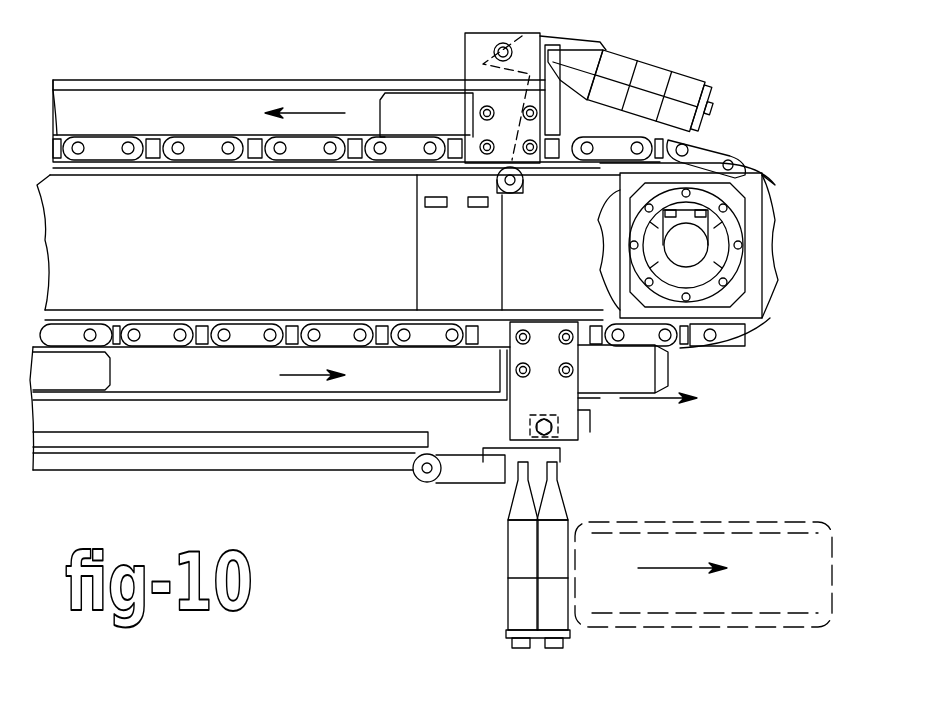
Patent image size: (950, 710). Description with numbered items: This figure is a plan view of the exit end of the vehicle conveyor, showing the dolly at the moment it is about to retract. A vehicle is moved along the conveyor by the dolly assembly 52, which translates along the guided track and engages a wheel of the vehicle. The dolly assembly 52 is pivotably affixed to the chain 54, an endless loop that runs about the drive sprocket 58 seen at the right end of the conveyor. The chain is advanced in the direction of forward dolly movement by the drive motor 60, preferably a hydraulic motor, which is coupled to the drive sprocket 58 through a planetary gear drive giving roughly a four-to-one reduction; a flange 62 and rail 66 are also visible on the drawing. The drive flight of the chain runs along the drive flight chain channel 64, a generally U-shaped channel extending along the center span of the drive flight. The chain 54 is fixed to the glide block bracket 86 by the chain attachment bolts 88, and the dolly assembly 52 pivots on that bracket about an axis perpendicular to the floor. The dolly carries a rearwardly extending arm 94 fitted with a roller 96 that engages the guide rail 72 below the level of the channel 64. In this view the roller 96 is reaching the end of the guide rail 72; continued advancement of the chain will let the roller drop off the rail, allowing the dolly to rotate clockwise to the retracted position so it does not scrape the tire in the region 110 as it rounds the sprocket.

The dolly assembly 52 is at (567, 502).
The chain 54 is at (303, 148).
The drive sprocket 58 is at (605, 212).
The drive motor 60 is at (692, 245).
The gearbox flange 62 is at (690, 205).
The drive flight chain channel 64 is at (193, 373).
The upper guide rail 66 is at (145, 80).
The guide rail 72 is at (287, 460).
The glide block bracket 86 is at (580, 408).
The chain attachment bolts 88 is at (635, 373).
The rearwardly extending arm 94 is at (475, 472).
The roller 96 is at (410, 477).
The product travel zone 110 is at (702, 606).